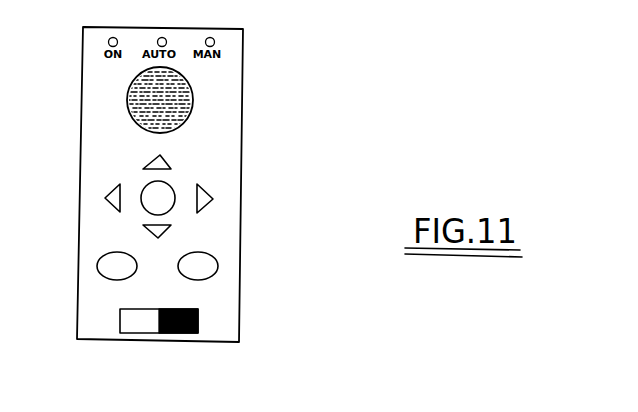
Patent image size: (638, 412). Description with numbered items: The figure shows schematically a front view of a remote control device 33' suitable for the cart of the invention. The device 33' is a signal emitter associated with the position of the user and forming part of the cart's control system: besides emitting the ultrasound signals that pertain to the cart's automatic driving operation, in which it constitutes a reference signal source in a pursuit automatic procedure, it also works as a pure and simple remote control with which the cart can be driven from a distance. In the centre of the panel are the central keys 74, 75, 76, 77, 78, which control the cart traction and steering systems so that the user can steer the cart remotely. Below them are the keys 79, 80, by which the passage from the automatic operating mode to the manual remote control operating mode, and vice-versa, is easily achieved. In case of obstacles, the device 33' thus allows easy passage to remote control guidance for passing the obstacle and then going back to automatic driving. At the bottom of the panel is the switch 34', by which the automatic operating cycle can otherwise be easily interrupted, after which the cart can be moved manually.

The remote control device 33' is at (193, 184).
The switch 34' is at (210, 313).
The central key 74 is at (210, 198).
The central key 75 is at (150, 162).
The central key 76 is at (108, 198).
The central key 77 is at (157, 232).
The central key 78 is at (163, 188).
The key 79 is at (218, 266).
The key 80 is at (97, 266).